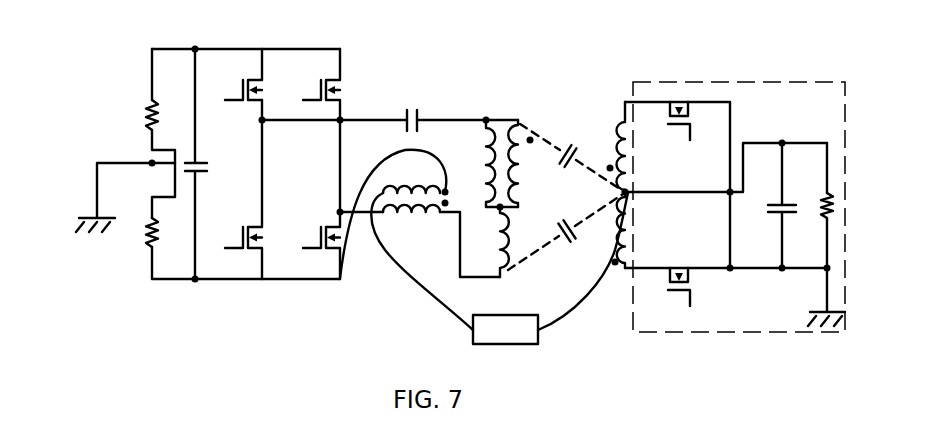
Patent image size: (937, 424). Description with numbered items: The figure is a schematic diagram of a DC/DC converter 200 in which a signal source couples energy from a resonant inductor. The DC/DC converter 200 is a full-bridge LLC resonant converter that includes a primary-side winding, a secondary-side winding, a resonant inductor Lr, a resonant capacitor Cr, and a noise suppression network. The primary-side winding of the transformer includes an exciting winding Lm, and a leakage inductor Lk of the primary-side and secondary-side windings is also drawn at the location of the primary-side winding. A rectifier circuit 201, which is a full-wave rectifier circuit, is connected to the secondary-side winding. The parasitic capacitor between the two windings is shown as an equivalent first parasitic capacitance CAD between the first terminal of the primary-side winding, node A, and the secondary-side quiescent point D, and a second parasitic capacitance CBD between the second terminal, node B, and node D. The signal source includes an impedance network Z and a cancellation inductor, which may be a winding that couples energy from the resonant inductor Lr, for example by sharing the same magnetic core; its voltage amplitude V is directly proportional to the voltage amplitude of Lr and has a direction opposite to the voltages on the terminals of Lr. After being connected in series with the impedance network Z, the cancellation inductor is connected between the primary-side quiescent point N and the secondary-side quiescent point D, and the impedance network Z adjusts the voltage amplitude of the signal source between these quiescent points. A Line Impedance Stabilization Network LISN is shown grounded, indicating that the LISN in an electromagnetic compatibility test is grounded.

The DC/DC converter 200 is at (437, 180).
The rectifier circuit 201 is at (663, 78).
The Line Impedance Stabilization Network LISN is at (102, 197).
The resonant capacitor Cr is at (410, 105).
The exciting winding Lm is at (484, 163).
The leakage inductor Lk is at (489, 242).
The resonant inductor Lr is at (421, 211).
The impedance network Z is at (505, 329).
The first parasitic capacitance CAD is at (571, 154).
The second parasitic capacitance CBD is at (565, 236).